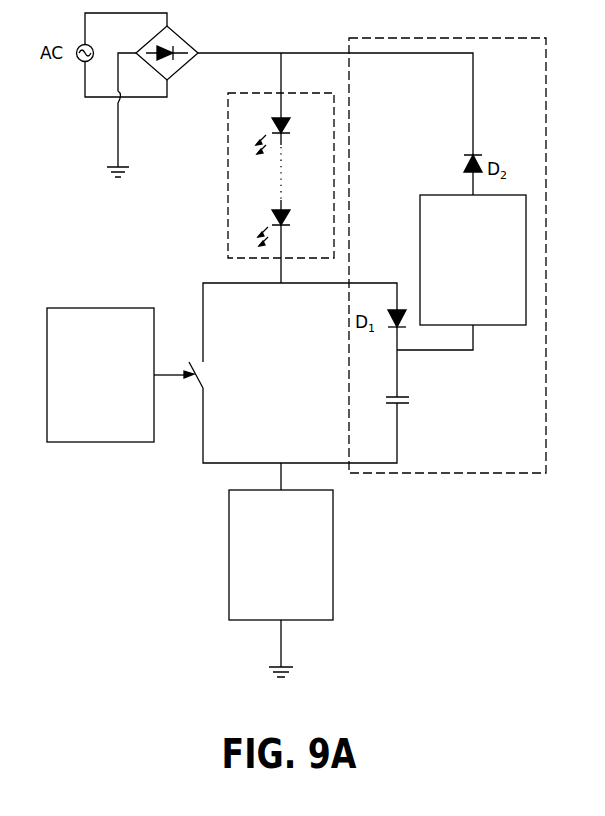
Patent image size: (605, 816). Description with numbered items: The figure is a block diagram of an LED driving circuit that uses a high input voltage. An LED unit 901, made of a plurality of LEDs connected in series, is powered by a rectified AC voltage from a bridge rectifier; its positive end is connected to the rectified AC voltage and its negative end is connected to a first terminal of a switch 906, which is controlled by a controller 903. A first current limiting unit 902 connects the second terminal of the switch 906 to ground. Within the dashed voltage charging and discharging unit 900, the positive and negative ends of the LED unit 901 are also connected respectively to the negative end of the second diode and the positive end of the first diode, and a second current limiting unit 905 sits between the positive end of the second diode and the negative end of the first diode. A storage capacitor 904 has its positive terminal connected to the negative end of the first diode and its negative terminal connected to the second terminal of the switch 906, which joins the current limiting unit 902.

The voltage charging and discharging unit 900 is at (546, 255).
The LED unit 901 is at (228, 176).
The first current limiting unit 902 is at (229, 557).
The controller 903 is at (100, 308).
The storage capacitor 904 is at (387, 392).
The second current limiting unit 905 is at (504, 325).
The switch 906 is at (210, 372).